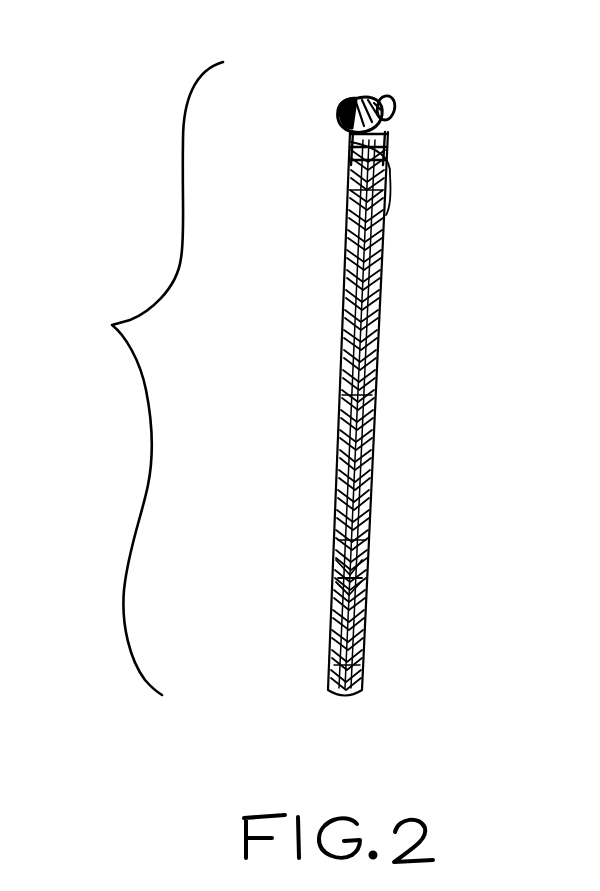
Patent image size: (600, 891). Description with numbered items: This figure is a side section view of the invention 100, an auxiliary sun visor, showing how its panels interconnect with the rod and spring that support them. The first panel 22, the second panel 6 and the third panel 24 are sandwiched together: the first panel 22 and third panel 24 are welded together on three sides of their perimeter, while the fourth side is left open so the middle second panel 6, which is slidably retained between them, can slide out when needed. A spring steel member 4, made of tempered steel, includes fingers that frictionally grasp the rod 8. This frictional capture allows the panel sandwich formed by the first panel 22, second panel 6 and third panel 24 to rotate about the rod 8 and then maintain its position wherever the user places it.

The invention 100 is at (136, 378).
The third panel 24 is at (367, 560).
The rod 8 is at (361, 100).
The spring steel member 4 is at (392, 108).
The first panel 22 is at (338, 575).
The second panel 6 is at (338, 580).